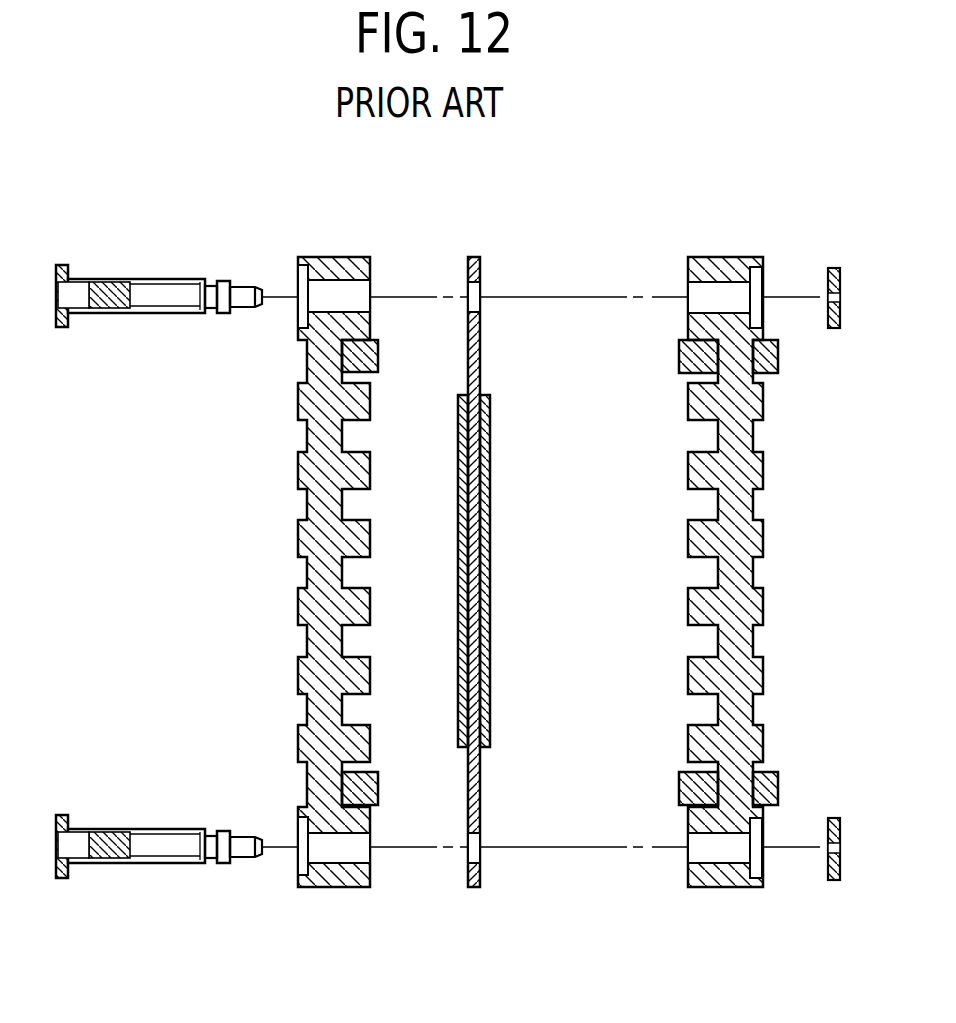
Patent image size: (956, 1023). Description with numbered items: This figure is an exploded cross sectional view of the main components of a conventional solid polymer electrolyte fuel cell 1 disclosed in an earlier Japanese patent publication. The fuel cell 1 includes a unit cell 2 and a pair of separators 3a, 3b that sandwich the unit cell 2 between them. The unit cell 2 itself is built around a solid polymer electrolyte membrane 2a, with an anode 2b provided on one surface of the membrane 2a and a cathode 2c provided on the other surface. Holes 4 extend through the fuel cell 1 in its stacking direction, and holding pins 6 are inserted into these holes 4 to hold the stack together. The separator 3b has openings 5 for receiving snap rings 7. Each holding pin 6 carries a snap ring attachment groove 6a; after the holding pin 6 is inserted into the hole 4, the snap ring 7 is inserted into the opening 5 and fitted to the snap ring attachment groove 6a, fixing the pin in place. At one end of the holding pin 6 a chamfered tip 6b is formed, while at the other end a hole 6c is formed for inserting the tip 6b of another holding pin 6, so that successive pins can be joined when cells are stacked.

The solid polymer electrolyte fuel cell 1 is at (737, 131).
The unit cell 2 is at (537, 572).
The solid polymer electrolyte membrane 2a is at (477, 533).
The anode 2b is at (483, 494).
The cathode 2c is at (513, 571).
The separator 3a is at (336, 268).
The separator 3b is at (722, 262).
The hole 4 is at (360, 288).
The opening 5 is at (757, 273).
The holding pin 6 is at (159, 532).
The snap ring attachment groove 6a is at (213, 285).
The chamfered tip 6b is at (228, 548).
The hole 6c is at (72, 292).
The snap ring 7 is at (832, 268).